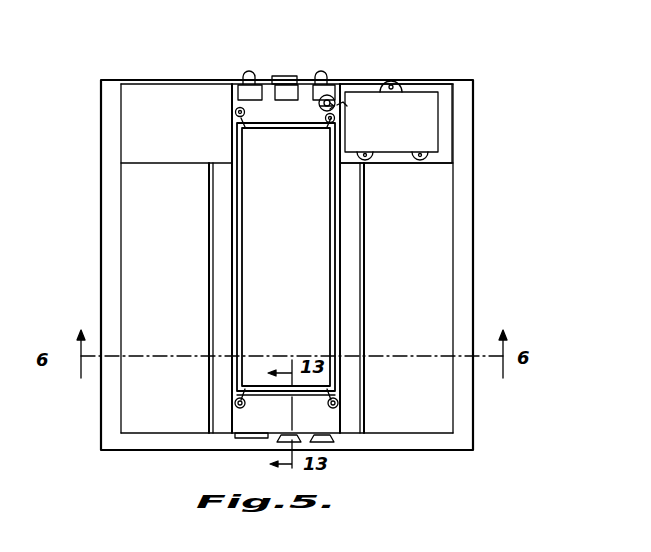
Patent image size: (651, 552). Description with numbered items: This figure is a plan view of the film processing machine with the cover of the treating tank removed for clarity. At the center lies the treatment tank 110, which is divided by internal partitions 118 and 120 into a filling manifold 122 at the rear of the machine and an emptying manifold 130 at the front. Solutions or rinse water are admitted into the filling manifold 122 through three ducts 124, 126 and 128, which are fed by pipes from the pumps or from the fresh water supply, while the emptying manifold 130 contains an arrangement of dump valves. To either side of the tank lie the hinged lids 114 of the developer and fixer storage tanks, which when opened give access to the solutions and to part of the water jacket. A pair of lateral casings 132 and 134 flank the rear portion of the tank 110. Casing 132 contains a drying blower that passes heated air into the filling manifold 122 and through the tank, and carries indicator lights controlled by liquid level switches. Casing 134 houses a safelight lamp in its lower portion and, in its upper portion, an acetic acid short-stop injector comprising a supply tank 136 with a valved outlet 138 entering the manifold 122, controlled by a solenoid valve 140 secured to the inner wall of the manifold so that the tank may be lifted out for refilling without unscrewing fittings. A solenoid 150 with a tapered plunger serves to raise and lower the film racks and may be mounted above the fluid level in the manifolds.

The treatment tank 110 is at (300, 270).
The hinged lid 114 is at (184, 303).
The internal partition 118 is at (291, 129).
The internal partition 120 is at (276, 398).
The filling manifold 122 is at (234, 111).
The duct 124 is at (263, 50).
The duct 126 is at (293, 93).
The duct 128 is at (328, 96).
The emptying manifold 130 is at (345, 426).
The lateral casing 132 is at (121, 151).
The lateral casing 134 is at (453, 141).
The supply tank 136 is at (415, 144).
The valved outlet 138 is at (347, 107).
The solenoid valve 140 is at (318, 106).
The solenoid 150 is at (234, 403).